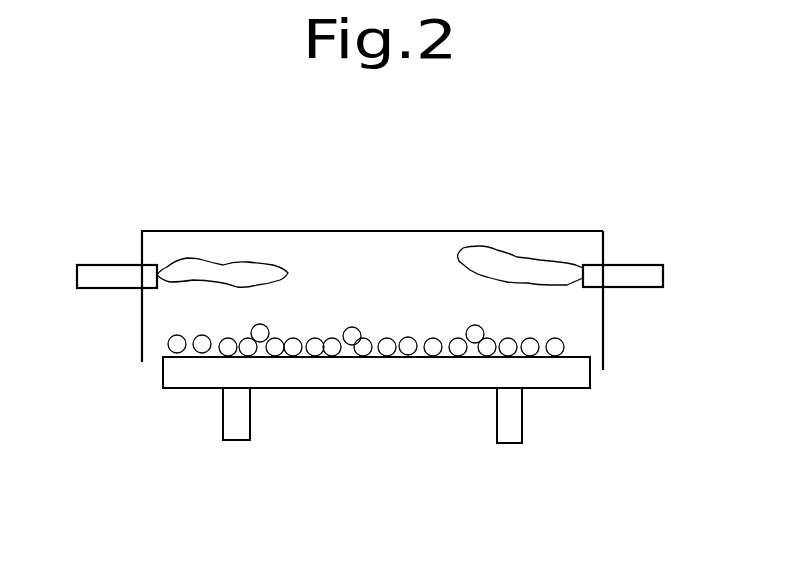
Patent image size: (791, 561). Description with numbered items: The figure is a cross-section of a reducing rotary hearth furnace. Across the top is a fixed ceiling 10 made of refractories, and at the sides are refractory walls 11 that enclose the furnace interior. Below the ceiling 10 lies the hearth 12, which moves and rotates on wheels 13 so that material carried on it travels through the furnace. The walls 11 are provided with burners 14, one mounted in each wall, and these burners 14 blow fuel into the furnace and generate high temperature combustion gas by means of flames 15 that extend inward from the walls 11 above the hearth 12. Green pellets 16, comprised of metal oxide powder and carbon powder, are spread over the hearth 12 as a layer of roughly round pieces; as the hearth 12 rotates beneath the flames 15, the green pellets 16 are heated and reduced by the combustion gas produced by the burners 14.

The fixed ceiling 10 is at (370, 231).
The walls 11 is at (603, 325).
The hearth 12 is at (393, 373).
The wheels 13 is at (244, 415).
The burners 14 is at (108, 273).
The flames 15 is at (222, 272).
The green pellets 16 is at (200, 345).